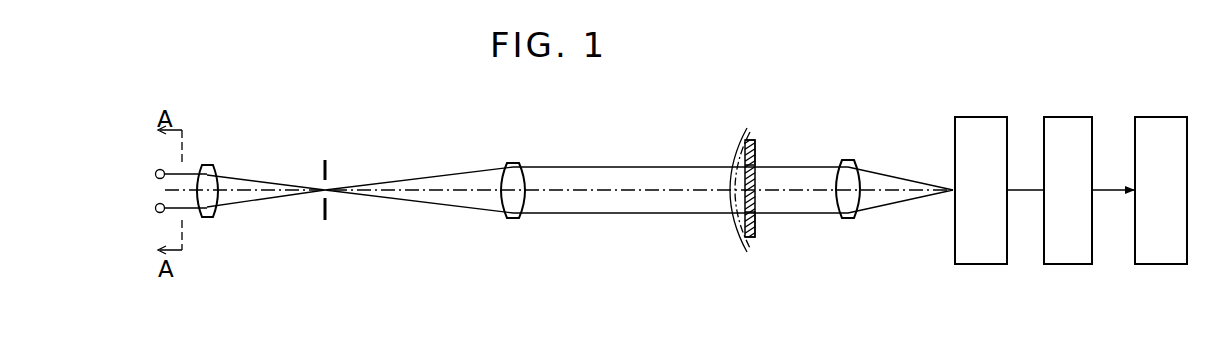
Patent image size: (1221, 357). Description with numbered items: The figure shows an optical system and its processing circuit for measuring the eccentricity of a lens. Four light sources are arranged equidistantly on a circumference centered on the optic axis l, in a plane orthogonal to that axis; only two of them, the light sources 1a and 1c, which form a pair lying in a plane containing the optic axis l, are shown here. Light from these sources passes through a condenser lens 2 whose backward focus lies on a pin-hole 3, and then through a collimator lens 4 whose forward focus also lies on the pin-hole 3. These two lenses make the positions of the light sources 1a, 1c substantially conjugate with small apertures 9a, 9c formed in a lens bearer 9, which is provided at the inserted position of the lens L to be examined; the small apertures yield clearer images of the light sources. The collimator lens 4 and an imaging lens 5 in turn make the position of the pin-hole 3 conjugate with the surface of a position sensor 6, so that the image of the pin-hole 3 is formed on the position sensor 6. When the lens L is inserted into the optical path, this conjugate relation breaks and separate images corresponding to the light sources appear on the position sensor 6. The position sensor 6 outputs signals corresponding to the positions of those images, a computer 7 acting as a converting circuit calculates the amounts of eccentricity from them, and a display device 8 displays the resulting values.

The light source 1a is at (155, 172).
The light source 1c is at (155, 209).
The condenser lens 2 is at (208, 166).
The pin-hole 3 is at (330, 173).
The collimator lens 4 is at (508, 164).
The imaging lens 5 is at (848, 160).
The position sensor 6 is at (955, 128).
The computer 7 is at (1044, 133).
The display device 8 is at (1135, 133).
The lens bearer 9 is at (753, 238).
The small aperture 9a is at (755, 217).
The small aperture 9c is at (755, 160).
The lens to be examined L is at (733, 147).
The optic axis l is at (243, 192).